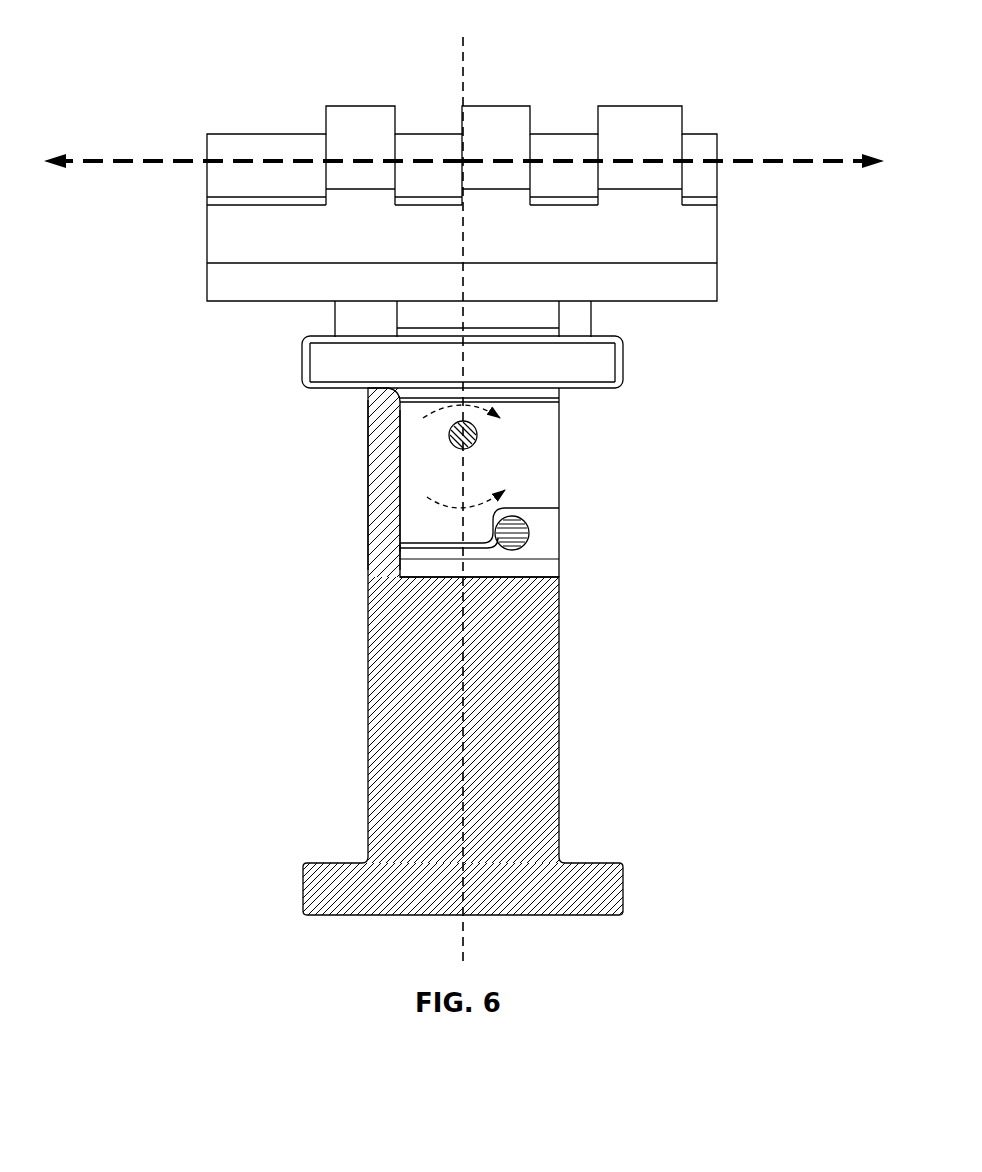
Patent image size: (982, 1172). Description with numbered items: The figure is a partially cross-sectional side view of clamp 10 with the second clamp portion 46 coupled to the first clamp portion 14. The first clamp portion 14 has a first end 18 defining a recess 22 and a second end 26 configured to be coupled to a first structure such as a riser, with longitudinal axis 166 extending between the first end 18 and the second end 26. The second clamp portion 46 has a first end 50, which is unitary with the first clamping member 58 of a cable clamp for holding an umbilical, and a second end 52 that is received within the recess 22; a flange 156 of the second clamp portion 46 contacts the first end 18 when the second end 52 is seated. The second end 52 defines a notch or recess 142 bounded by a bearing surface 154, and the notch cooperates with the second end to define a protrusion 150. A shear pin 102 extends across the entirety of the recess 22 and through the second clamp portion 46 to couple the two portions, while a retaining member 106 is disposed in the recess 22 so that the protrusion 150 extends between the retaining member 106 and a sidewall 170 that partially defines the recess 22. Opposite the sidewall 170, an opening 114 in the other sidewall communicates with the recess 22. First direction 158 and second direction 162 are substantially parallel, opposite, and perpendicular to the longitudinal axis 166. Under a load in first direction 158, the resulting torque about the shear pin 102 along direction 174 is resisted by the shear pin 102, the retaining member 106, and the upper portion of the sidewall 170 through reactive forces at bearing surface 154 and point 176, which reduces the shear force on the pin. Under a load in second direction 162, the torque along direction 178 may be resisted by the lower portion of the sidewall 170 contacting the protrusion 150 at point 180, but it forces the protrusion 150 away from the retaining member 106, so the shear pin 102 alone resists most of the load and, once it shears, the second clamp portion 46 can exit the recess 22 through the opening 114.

The clamp 10 is at (288, 90).
The first clamp portion 14 is at (395, 618).
The first end 18 is at (378, 385).
The recess 22 is at (400, 522).
The second end 26 is at (592, 850).
The second clamp portion 46 is at (613, 386).
The first end 50 is at (727, 322).
The second end 52 is at (453, 555).
The first clamping member 58 is at (243, 233).
The shear pin 102 is at (450, 438).
The retaining member 106 is at (530, 538).
The opening 114 is at (562, 532).
The notch or recess 142 is at (523, 508).
The protrusion 150 is at (397, 552).
The bearing surface 154 is at (508, 545).
The flange 156 is at (622, 367).
The first direction 158 is at (117, 157).
The second direction 162 is at (760, 160).
The longitudinal axis 166 is at (463, 70).
The sidewall 170 is at (378, 483).
The direction 174 is at (458, 505).
The point 176 is at (393, 413).
The direction 178 is at (477, 408).
The point 180 is at (437, 543).